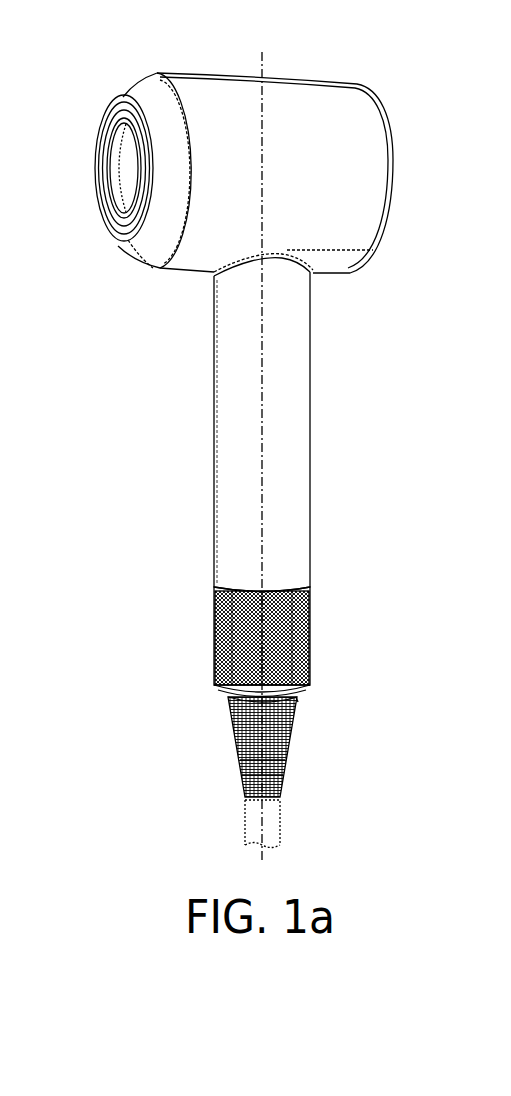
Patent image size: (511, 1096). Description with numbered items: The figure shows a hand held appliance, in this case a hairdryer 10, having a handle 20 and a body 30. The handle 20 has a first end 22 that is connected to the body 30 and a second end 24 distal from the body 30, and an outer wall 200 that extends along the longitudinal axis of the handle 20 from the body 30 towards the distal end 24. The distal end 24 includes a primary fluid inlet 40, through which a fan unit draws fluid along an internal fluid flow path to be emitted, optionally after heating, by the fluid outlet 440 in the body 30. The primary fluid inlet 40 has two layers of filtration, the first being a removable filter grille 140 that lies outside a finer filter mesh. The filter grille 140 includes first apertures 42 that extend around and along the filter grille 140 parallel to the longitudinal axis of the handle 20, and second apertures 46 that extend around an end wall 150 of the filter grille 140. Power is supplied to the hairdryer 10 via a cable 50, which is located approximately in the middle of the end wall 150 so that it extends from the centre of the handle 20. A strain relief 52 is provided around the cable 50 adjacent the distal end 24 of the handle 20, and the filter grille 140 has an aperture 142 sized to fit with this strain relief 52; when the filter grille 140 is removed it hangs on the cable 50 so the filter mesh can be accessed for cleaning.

The hairdryer 10 is at (266, 460).
The handle 20 is at (310, 432).
The first end 22 is at (327, 262).
The second end 24 is at (320, 686).
The body 30 is at (383, 172).
The primary fluid inlet 40 is at (276, 636).
The first apertures 42 is at (215, 598).
The second apertures 46 is at (242, 747).
The cable 50 is at (268, 816).
The strain relief 52 is at (242, 764).
The filter grille 140 is at (170, 665).
The aperture 142 is at (304, 700).
The end wall 150 is at (300, 694).
The outer wall 200 is at (300, 447).
The fluid outlet 440 is at (118, 104).